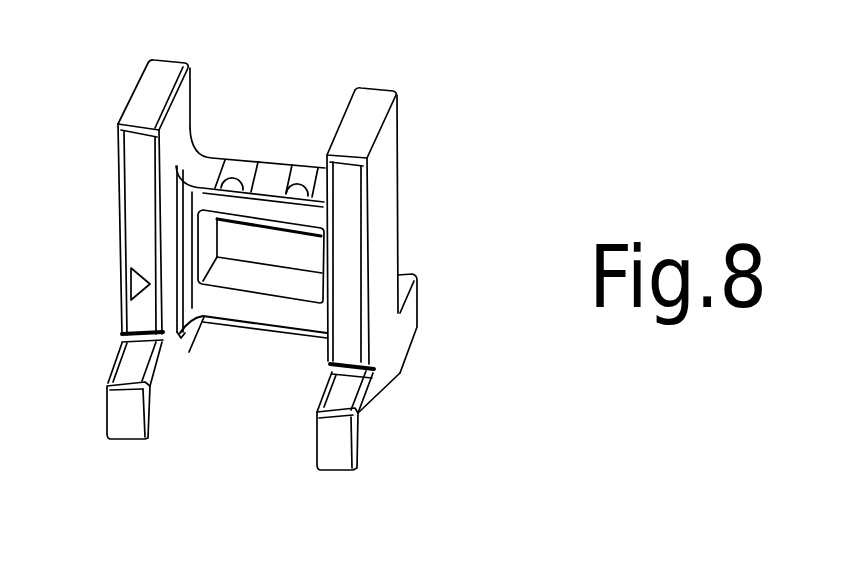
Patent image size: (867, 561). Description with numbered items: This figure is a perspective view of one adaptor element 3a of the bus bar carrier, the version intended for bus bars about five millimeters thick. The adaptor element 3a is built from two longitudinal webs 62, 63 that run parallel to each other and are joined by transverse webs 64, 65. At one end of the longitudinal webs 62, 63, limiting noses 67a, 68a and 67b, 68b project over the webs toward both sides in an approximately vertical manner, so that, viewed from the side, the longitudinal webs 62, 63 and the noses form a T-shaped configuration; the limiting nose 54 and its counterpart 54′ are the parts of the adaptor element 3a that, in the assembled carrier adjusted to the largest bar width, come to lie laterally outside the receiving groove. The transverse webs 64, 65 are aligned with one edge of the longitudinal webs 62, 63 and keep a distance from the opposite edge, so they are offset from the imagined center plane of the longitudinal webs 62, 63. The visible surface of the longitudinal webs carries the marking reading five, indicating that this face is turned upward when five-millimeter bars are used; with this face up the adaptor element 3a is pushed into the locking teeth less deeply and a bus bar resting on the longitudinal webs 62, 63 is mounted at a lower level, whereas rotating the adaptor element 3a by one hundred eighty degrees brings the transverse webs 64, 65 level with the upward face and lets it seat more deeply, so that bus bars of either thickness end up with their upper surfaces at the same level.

The adaptor element 3a is at (440, 88).
The longitudinal web 62 is at (383, 187).
The longitudinal web 63 is at (118, 181).
The transverse web 64 is at (248, 210).
The transverse web 65 is at (258, 314).
The limiting nose 54 is at (108, 408).
The right foot / latching leg 54′ is at (385, 383).
The limiting nose 67a is at (128, 417).
The limiting nose 67b is at (184, 341).
The limiting nose 68a is at (337, 452).
The limiting nose 68b is at (410, 323).